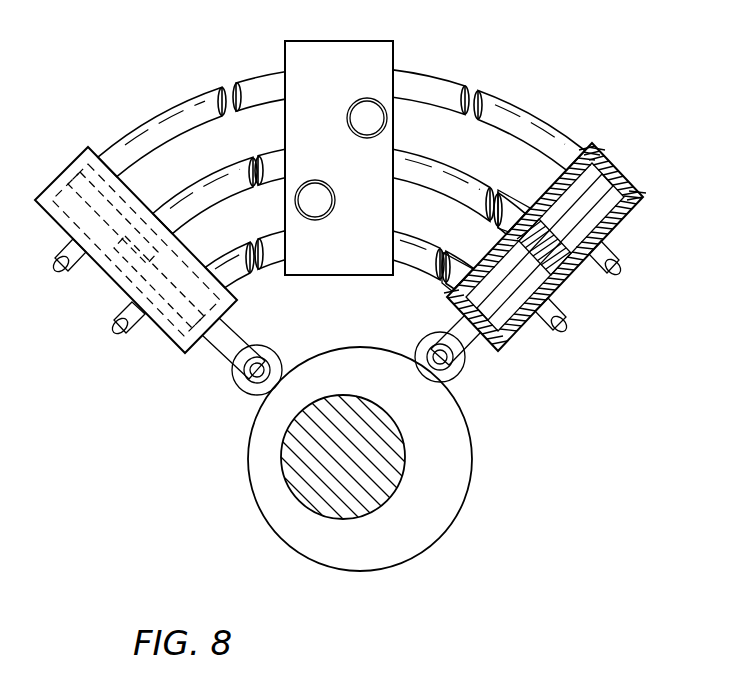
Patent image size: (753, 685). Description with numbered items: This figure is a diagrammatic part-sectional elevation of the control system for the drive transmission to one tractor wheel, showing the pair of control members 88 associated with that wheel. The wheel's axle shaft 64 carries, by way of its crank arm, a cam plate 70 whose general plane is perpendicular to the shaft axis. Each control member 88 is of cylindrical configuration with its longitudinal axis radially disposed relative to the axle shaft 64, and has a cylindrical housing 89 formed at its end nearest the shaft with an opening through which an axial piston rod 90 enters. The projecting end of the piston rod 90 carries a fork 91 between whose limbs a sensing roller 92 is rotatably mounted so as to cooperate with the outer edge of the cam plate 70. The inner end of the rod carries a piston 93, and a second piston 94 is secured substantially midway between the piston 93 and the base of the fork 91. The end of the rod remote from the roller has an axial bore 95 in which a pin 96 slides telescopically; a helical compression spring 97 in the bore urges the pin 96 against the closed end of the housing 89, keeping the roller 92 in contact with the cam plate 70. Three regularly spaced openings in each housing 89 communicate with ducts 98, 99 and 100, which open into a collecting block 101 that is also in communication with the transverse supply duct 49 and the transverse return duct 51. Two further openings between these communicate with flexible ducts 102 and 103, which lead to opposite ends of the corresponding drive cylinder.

The transverse duct 49 is at (366, 98).
The rear transverse return duct 51 is at (328, 217).
The shaft 64 is at (300, 471).
The cam plate 70 is at (448, 512).
The control member 88 is at (72, 160).
The cylindrical housing 89 is at (637, 205).
The piston rod 90 is at (238, 334).
The fork 91 is at (264, 361).
The sensing roller 92 is at (241, 388).
The piston 93 is at (133, 212).
The second piston 94 is at (212, 268).
The axial bore 95 is at (576, 265).
The pin 96 is at (612, 178).
The helical compression spring 97 is at (563, 286).
The duct 98 is at (218, 89).
The duct 99 is at (260, 159).
The duct 100 is at (260, 240).
The collecting block 101 is at (348, 41).
The duct 102 is at (120, 335).
The duct 103 is at (67, 273).